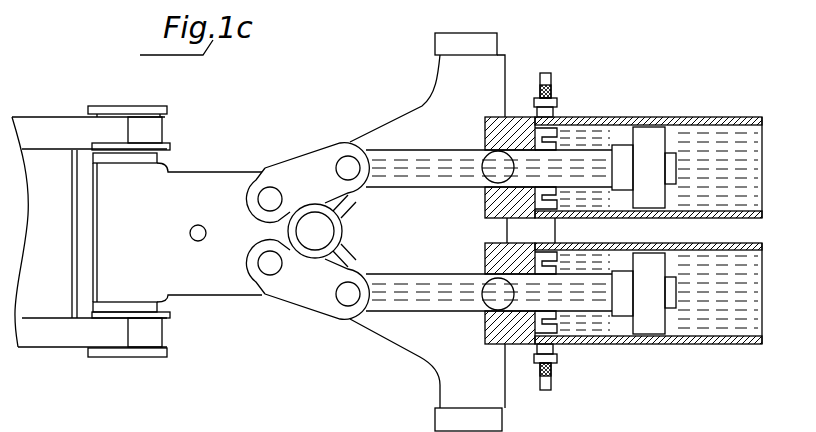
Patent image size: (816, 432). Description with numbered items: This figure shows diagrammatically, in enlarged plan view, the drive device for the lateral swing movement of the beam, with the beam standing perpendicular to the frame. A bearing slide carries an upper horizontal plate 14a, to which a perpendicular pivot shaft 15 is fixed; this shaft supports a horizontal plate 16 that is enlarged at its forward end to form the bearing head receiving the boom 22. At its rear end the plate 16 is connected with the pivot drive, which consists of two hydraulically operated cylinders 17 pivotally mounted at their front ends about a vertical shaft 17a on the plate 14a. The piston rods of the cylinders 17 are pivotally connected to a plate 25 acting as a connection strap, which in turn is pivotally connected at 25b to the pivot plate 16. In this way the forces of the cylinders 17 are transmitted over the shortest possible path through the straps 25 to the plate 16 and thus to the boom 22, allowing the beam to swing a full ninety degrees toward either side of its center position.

The plate 14a is at (492, 68).
The pivot shaft 15 is at (318, 223).
The horizontal plate 16 is at (197, 188).
The hydraulically operated cylinder 17 is at (583, 132).
The vertical shaft 17a is at (500, 150).
The boom 22 is at (60, 341).
The plate 25 is at (300, 167).
The pivotal connection 25b is at (265, 192).